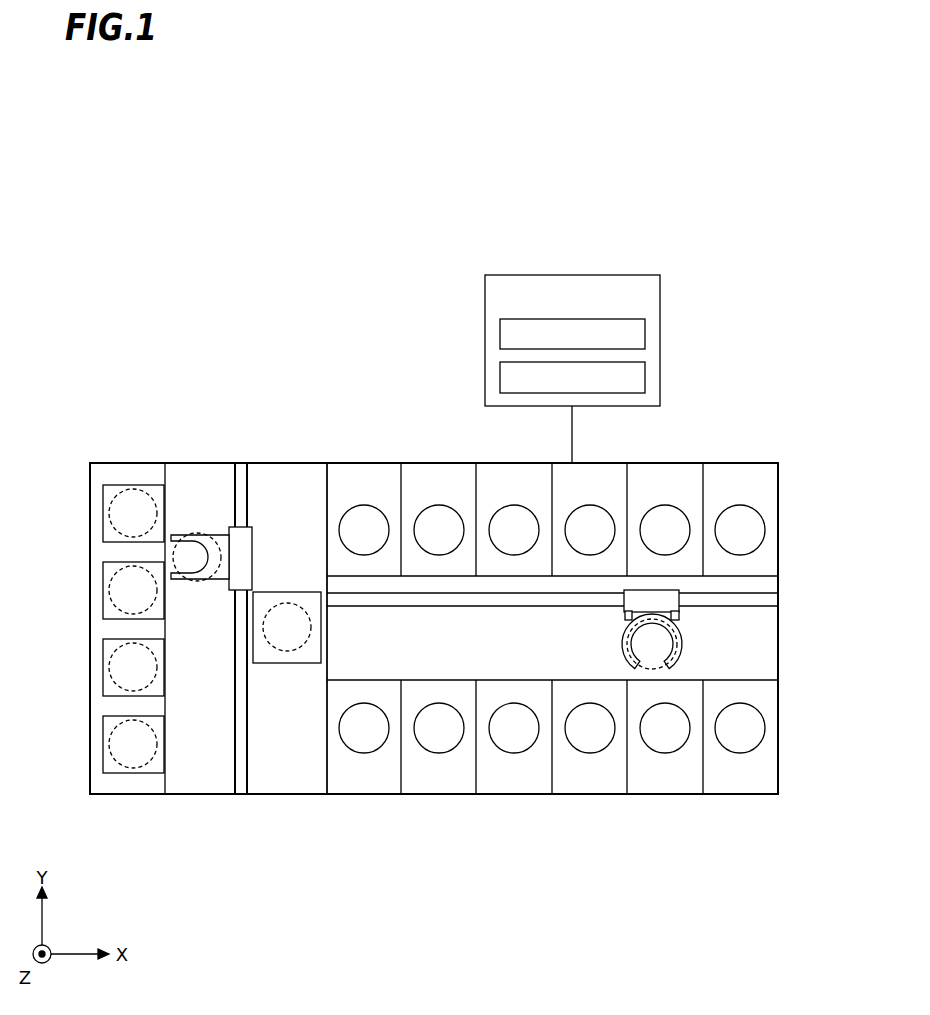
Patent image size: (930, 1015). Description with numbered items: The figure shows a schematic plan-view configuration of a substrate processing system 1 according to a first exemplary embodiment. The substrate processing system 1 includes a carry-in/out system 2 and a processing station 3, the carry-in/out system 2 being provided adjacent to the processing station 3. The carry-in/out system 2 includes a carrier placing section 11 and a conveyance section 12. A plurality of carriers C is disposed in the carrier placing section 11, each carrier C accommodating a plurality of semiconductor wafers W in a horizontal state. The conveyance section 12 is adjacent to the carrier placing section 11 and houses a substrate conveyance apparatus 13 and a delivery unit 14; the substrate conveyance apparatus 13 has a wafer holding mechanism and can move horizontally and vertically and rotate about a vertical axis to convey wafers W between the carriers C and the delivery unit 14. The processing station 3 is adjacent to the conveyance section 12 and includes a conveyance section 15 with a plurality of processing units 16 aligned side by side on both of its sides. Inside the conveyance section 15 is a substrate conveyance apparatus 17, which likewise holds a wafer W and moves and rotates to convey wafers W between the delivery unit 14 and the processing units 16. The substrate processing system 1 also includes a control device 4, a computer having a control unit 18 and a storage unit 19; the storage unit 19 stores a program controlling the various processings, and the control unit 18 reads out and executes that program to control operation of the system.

The substrate processing system 1 is at (108, 414).
The carry-in/out system 2 is at (87, 842).
The processing station 3 is at (328, 842).
The control device 4 is at (600, 275).
The carrier placing section 11 is at (126, 796).
The conveyance section 12 is at (282, 796).
The substrate conveyance apparatus 13 is at (222, 535).
The delivery unit 14 is at (287, 592).
The conveyance section 15 is at (787, 641).
The processing unit 16 is at (364, 462).
The substrate conveyance apparatus 17 is at (681, 642).
The control unit 18 is at (645, 332).
The storage unit 19 is at (645, 375).
The wafer W is at (112, 497).
The carrier C is at (103, 522).